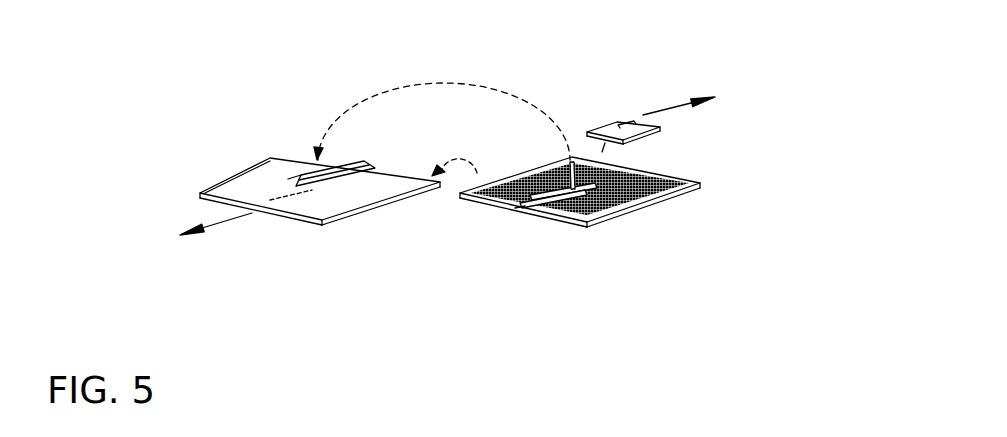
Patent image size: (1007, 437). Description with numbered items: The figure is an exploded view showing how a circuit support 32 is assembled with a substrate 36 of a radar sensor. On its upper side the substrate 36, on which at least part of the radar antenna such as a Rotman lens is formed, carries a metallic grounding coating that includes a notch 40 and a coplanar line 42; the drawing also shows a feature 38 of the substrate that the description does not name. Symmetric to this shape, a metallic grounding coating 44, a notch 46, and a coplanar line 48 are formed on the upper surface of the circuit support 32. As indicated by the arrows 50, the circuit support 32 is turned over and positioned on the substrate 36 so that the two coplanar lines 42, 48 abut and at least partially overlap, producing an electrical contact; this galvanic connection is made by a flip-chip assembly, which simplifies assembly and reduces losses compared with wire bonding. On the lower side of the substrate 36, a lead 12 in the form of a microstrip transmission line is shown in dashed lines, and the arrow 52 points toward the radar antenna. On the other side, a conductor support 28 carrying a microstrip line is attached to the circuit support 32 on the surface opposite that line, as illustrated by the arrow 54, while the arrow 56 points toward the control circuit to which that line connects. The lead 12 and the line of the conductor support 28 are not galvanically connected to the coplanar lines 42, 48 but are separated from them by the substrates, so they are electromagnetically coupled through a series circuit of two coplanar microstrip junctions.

The lead 12 is at (288, 202).
The conductor support 28 is at (643, 133).
The circuit support 32 is at (670, 195).
The substrate 36 is at (227, 183).
The top surface 38 is at (342, 197).
The notch 40 is at (287, 178).
The coplanar line 42 is at (347, 173).
The metallic grounding coating 44 is at (603, 197).
The notch 46 is at (563, 197).
The coplanar line 48 is at (522, 208).
The arrows 50 is at (453, 163).
The arrow 52 is at (230, 218).
The arrow 54 is at (602, 152).
The arrow 56 is at (663, 108).